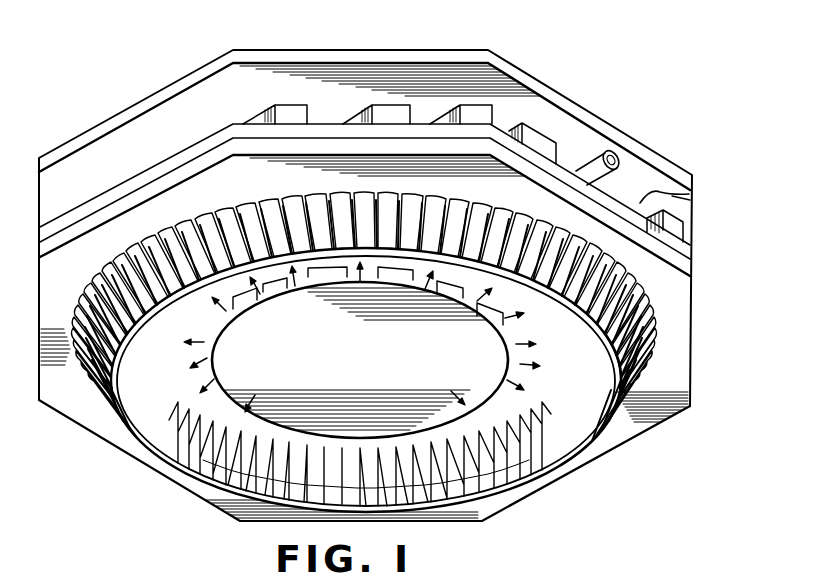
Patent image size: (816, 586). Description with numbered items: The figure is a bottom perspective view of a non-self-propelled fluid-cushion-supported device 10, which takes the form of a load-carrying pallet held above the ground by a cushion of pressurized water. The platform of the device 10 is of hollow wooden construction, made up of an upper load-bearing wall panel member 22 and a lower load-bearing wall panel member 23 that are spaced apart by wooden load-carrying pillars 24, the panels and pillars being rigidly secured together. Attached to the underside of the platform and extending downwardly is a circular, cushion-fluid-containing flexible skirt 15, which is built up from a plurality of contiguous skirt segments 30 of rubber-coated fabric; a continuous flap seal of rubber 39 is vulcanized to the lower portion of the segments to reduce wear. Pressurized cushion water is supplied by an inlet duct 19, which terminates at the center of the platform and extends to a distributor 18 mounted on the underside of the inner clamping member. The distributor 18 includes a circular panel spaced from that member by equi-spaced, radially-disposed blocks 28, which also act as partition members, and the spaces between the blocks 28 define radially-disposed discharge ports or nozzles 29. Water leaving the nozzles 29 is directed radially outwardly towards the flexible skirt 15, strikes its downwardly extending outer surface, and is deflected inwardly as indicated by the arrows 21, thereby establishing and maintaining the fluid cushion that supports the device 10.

The fluid-cushion-supported device 10 is at (638, 112).
The flexible skirt 15 is at (556, 478).
The distributor 18 is at (247, 407).
The inlet duct 19 is at (583, 167).
The arrows 21 is at (202, 343).
The upper load-bearing wall panel member 22 is at (690, 194).
The lower load-bearing wall panel member 23 is at (690, 200).
The load-carrying pillars 24 is at (386, 104).
The radially-disposed blocks 28 is at (327, 277).
The discharge ports or nozzles 29 is at (422, 280).
The skirt segments 30 is at (474, 225).
The flap seal of rubber 39 is at (603, 362).